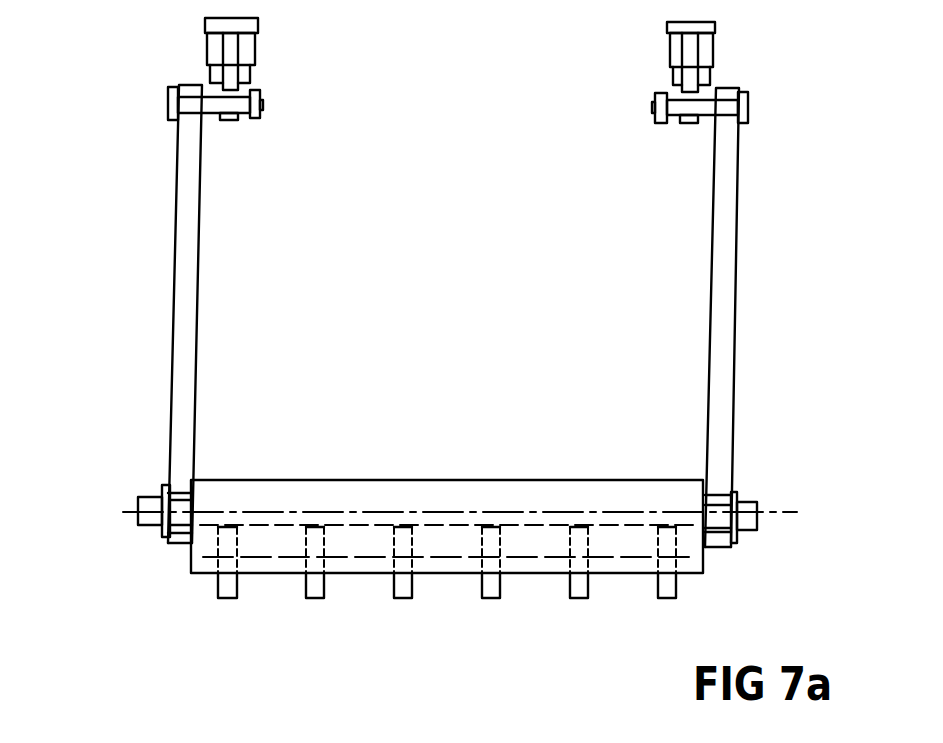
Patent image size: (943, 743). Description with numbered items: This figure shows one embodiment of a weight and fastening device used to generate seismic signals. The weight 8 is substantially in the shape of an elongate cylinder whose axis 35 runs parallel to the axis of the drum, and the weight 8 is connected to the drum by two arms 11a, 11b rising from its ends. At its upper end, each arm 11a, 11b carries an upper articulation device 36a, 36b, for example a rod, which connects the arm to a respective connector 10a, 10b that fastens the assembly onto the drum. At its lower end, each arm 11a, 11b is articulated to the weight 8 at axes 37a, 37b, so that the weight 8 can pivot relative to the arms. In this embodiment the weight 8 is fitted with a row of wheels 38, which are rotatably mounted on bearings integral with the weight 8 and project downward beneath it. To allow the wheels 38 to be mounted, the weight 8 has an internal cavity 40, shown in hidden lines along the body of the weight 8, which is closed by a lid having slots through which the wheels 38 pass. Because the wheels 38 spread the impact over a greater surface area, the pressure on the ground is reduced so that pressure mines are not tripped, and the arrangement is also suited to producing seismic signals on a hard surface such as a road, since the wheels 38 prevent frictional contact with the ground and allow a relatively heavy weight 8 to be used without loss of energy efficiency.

The weight 8 is at (375, 503).
The connector 10a is at (667, 33).
The connector 10b is at (258, 33).
The arm 11a is at (727, 283).
The arm 11b is at (192, 200).
The axis 35 is at (787, 517).
The upper articulation device 36a is at (748, 100).
The upper articulation device 36b is at (173, 97).
The axis 37a is at (717, 508).
The axis 37b is at (182, 507).
The wheel 38 is at (397, 587).
The internal cavity 40 is at (273, 538).